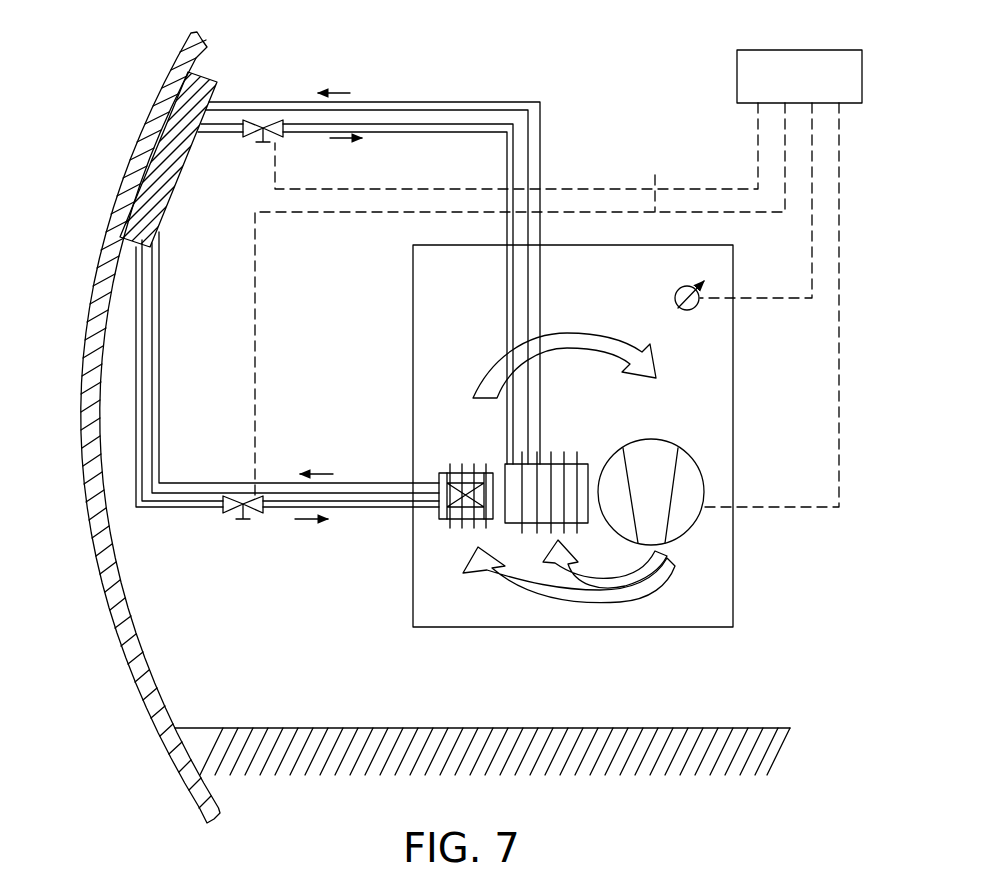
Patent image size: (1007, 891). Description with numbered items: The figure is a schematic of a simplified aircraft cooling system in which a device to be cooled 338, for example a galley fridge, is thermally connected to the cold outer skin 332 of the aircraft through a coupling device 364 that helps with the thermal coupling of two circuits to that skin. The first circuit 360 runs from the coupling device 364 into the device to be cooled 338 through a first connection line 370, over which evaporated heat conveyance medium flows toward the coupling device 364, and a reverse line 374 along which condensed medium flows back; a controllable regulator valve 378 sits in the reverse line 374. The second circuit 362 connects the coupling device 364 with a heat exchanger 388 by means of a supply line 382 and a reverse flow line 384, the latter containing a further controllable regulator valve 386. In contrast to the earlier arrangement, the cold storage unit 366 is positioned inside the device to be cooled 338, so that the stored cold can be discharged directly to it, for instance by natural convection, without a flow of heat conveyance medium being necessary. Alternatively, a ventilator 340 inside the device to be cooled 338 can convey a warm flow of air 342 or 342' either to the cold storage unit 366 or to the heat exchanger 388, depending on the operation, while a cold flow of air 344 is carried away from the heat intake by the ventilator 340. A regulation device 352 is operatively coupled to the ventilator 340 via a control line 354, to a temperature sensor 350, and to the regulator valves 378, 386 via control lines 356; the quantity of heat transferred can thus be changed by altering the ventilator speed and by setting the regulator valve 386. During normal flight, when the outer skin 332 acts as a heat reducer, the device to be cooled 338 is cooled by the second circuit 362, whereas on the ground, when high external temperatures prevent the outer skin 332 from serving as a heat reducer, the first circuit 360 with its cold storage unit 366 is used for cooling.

The outer skin 332 is at (88, 305).
The coupling device 364 is at (160, 158).
The first circuit 360 is at (408, 242).
The first connection line 370 is at (542, 147).
The reverse line 374 is at (405, 134).
The regulator valve 378 is at (250, 142).
The second circuit 362 is at (279, 407).
The supply line 382 is at (190, 481).
The reverse flow line 384 is at (372, 510).
The regulator valve 386 is at (232, 521).
The regulation device 352 is at (737, 68).
The control lines 356 is at (641, 189).
The control line 354 is at (836, 342).
The device to be cooled 338 is at (734, 371).
The temperature sensor 350 is at (676, 292).
The cold flow of air 344 is at (483, 372).
The heat exchanger 388 is at (456, 465).
The cold storage unit 366 is at (571, 462).
The ventilator 340 is at (706, 484).
The warm flow of air 342 is at (677, 567).
The warm flow of air 342' is at (569, 605).